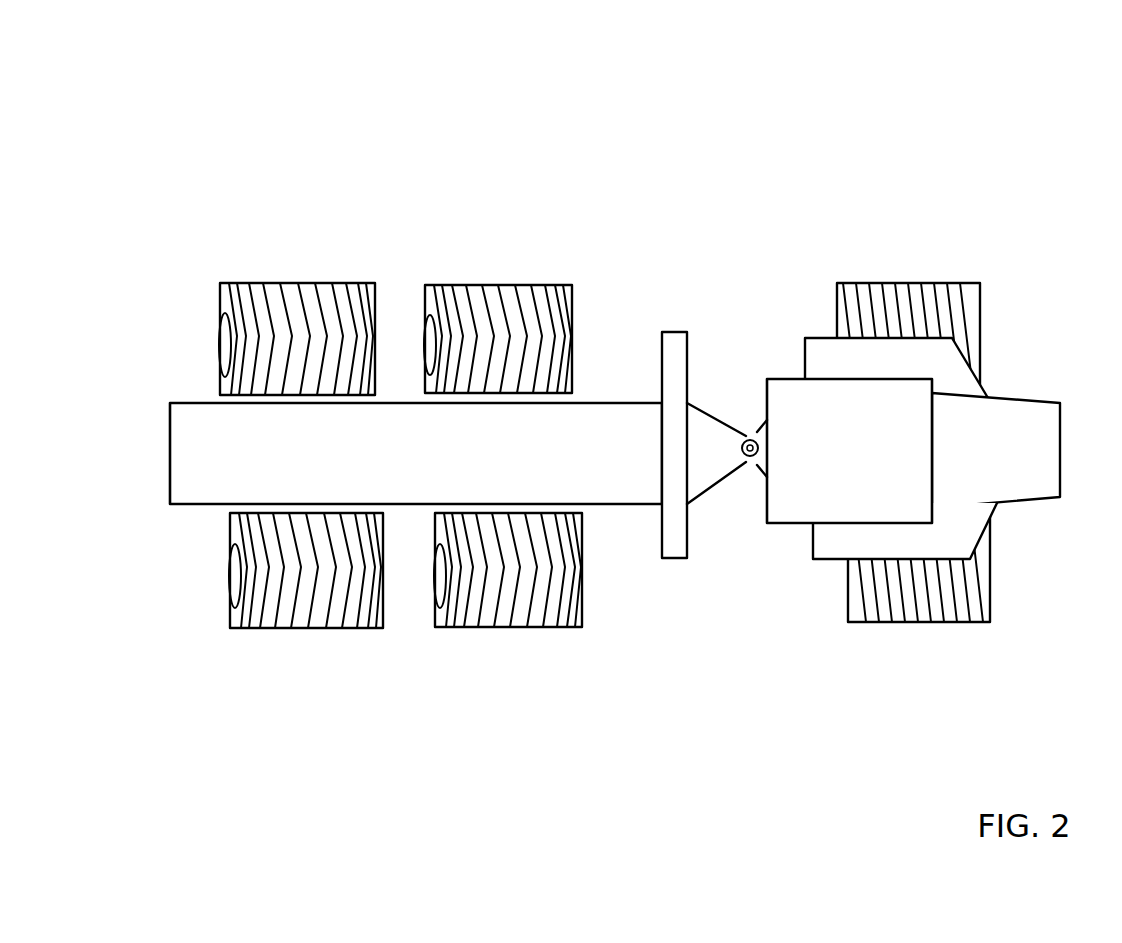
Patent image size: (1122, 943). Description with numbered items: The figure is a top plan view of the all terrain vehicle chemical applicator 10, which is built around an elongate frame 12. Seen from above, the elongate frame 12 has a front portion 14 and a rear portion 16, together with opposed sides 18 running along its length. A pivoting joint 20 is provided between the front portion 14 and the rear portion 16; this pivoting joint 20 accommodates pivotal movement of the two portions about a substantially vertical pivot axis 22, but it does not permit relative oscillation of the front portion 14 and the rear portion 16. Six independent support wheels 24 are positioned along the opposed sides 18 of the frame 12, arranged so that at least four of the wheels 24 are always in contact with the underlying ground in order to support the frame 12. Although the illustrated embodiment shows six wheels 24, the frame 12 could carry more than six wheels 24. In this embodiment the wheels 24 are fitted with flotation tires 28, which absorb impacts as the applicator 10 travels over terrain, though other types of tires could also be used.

The all terrain vehicle chemical applicator 10 is at (875, 93).
The elongate frame 12 is at (404, 472).
The front portion 14 is at (1050, 502).
The rear portion 16 is at (183, 428).
The opposed sides 18 is at (609, 400).
The pivoting joint 20 is at (747, 440).
The substantially vertical pivot axis 22 is at (752, 468).
The independent support wheels 24 is at (283, 283).
The flotation tires 28 is at (335, 300).